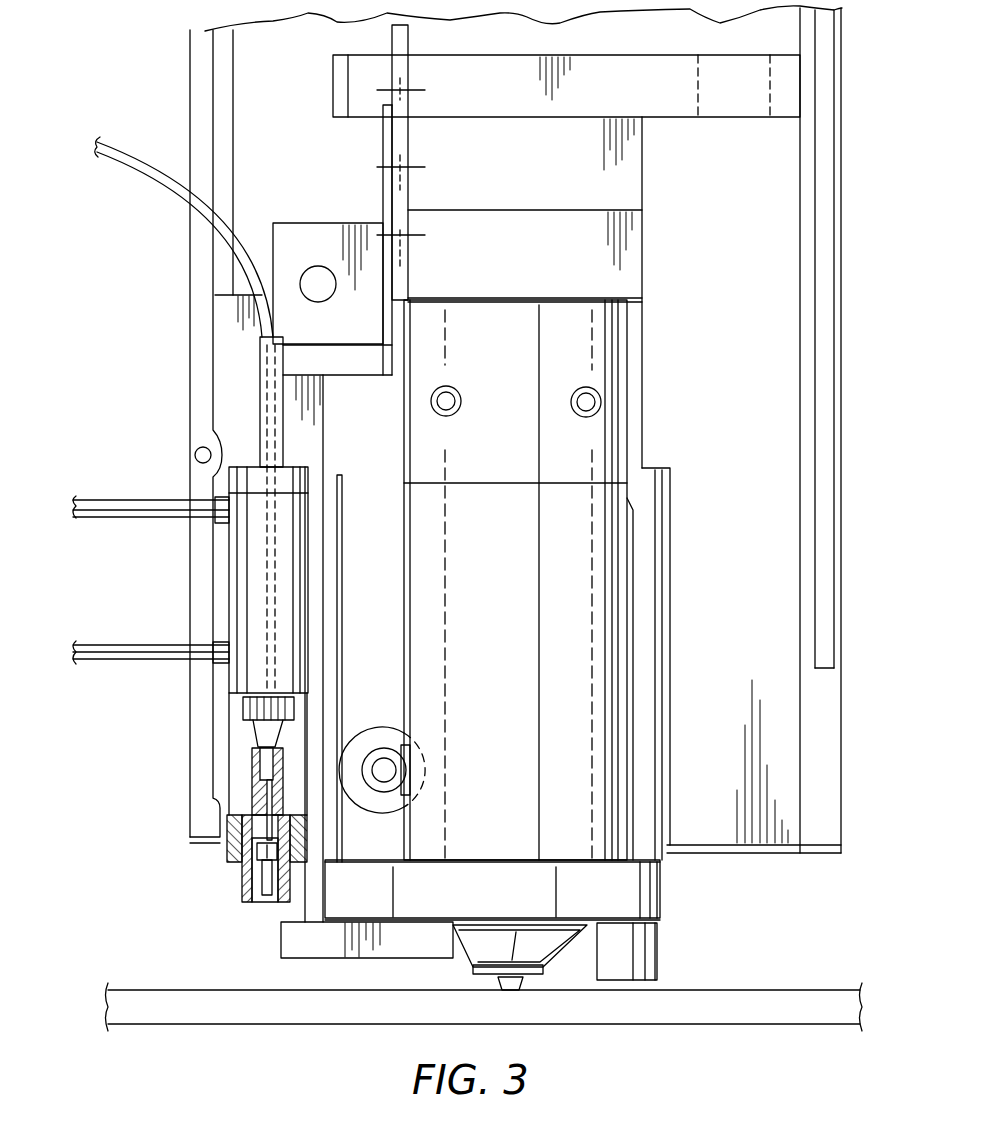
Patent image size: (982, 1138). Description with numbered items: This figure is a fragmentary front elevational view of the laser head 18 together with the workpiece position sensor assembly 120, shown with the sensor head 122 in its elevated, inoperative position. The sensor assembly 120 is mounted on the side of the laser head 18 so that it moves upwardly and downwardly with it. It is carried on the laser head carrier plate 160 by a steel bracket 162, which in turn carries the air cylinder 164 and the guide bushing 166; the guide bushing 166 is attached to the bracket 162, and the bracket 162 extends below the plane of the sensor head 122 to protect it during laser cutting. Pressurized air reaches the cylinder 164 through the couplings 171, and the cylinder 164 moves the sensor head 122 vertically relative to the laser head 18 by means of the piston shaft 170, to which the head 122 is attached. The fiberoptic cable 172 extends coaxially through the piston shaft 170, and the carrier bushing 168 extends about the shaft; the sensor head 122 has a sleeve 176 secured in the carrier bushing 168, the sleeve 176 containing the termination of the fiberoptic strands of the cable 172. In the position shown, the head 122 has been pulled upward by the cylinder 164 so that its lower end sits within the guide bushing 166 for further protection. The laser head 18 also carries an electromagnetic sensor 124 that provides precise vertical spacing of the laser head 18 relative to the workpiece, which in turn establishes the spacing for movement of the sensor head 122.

The laser head 18 is at (575, 889).
The workpiece position sensor assembly 120 is at (214, 777).
The sensor head 122 is at (260, 904).
The electromagnetic sensor 124 is at (633, 962).
The laser head carrier plate 160 is at (370, 886).
The bracket 162 is at (316, 578).
The air cylinder 164 is at (240, 672).
The guide bushing 166 is at (246, 873).
The carrier bushing 168 is at (256, 793).
The piston shaft 170 is at (262, 380).
The couplings 171 is at (130, 495).
The fiberoptic cable 172 is at (143, 160).
The sleeve 176 is at (245, 880).